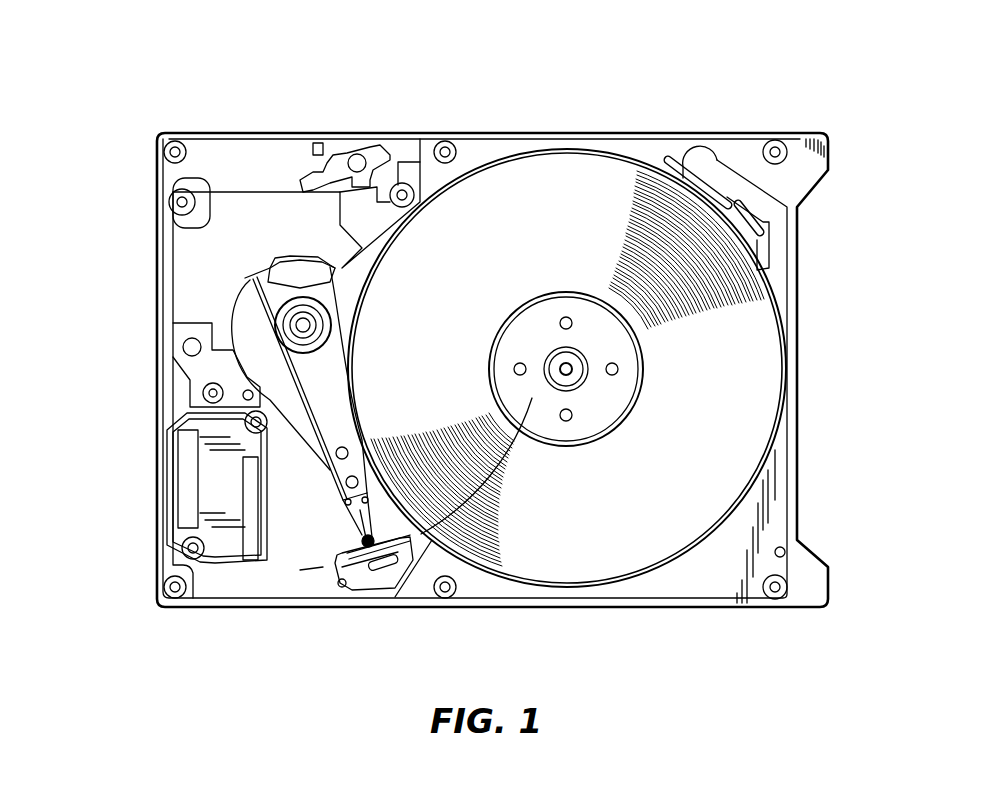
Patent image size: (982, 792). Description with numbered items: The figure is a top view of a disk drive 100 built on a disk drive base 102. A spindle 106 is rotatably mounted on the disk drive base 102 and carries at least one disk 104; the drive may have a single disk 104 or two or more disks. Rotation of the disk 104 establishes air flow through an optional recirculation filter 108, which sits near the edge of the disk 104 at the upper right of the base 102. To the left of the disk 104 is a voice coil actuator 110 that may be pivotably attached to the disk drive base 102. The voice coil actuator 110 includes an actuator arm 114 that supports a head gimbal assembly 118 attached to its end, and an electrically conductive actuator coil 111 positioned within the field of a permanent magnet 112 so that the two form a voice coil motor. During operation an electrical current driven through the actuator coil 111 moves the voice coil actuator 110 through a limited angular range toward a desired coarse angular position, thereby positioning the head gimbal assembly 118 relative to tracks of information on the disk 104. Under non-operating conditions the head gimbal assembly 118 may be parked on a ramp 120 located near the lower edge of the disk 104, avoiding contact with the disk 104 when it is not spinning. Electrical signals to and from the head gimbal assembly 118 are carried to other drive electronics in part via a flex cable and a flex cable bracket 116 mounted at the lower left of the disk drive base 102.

The disk drive 100 is at (262, 91).
The disk drive base 102 is at (785, 485).
The disk 104 is at (567, 368).
The spindle 106 is at (608, 398).
The recirculation filter 108 is at (700, 187).
The voice coil actuator 110 is at (323, 288).
The actuator coil 111 is at (284, 268).
The permanent magnet 112 is at (193, 300).
The actuator arm 114 is at (322, 437).
The flex cable bracket 116 is at (220, 493).
The head gimbal assembly 118 is at (356, 522).
The ramp 120 is at (357, 582).